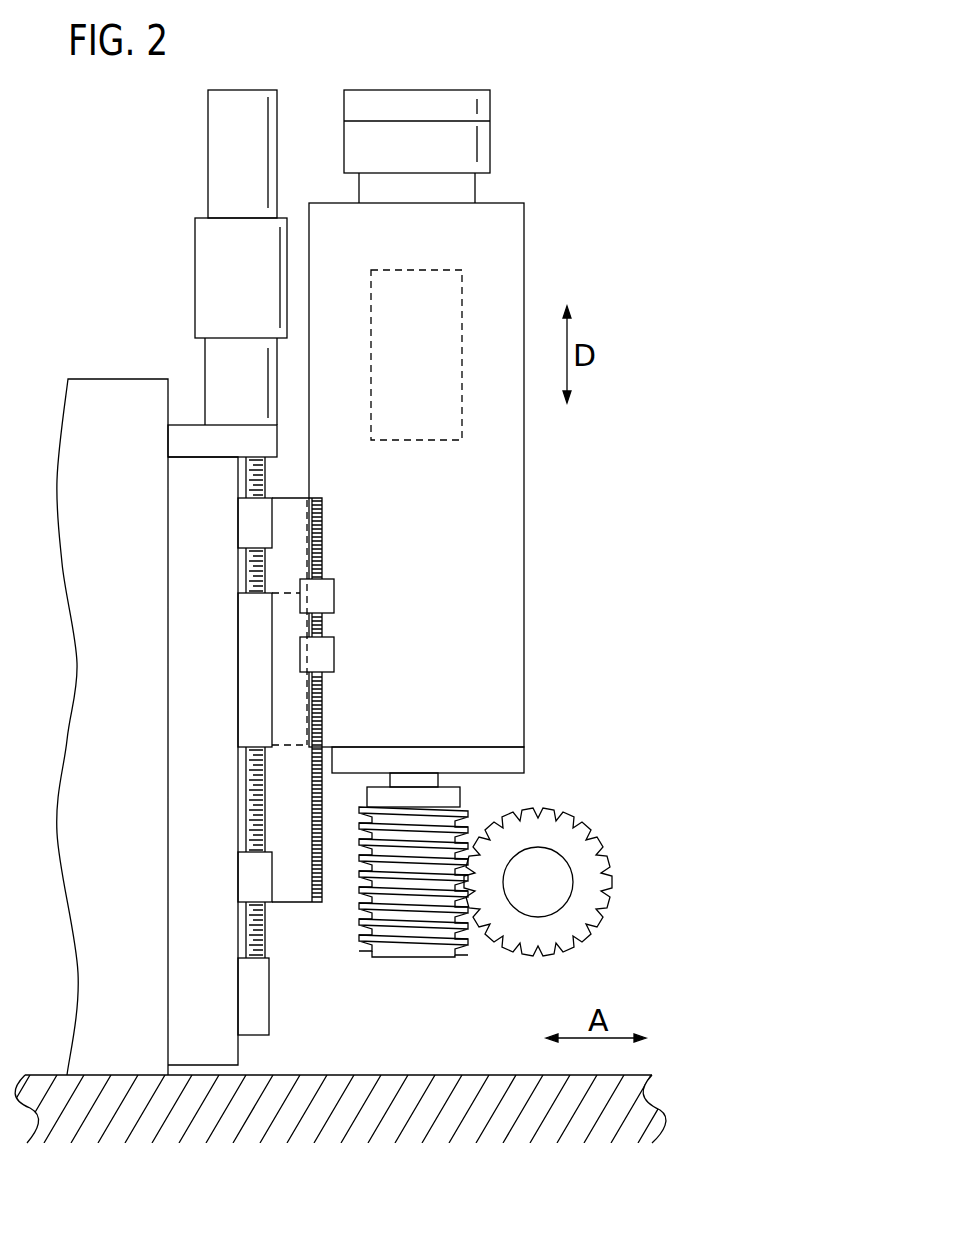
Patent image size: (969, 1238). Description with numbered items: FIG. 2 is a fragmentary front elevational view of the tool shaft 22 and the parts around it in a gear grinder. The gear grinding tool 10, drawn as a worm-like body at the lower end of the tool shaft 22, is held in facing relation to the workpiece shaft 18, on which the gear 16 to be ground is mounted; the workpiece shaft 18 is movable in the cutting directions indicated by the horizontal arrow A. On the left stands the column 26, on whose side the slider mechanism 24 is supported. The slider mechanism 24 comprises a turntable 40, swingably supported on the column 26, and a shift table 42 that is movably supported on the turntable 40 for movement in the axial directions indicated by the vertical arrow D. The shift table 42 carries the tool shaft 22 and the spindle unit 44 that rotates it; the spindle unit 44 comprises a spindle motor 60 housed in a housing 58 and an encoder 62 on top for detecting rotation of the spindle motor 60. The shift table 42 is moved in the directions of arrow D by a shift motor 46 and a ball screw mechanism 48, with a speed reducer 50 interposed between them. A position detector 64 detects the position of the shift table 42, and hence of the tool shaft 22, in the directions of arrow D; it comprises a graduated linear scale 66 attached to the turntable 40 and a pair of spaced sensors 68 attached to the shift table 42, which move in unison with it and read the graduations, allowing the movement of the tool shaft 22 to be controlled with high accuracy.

The gear grinding tool 10 is at (415, 935).
The gear 16 is at (580, 852).
The workpiece shaft 18 is at (545, 887).
The tool shaft 22 is at (418, 780).
The slider mechanism 24 is at (159, 545).
The column 26 is at (110, 395).
The turntable 40 is at (172, 488).
The shift table 42 is at (252, 640).
The spindle unit 44 is at (538, 509).
The shift motor 46 is at (208, 118).
The ball screw mechanism 48 is at (255, 777).
The speed reducer 50 is at (200, 258).
The housing 58 is at (503, 252).
The spindle motor 60 is at (427, 270).
The encoder 62 is at (440, 98).
The position detector 64 is at (341, 519).
The linear scale 66 is at (295, 718).
The sensors 68 is at (320, 594).